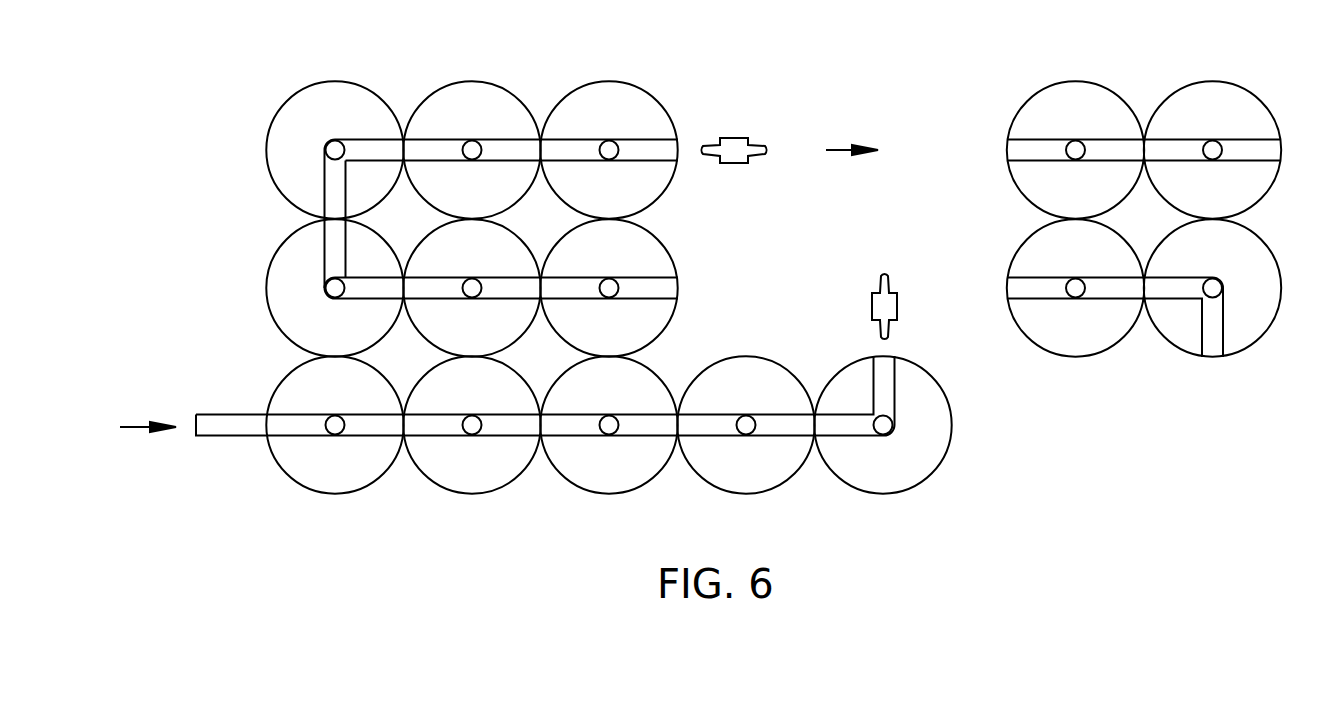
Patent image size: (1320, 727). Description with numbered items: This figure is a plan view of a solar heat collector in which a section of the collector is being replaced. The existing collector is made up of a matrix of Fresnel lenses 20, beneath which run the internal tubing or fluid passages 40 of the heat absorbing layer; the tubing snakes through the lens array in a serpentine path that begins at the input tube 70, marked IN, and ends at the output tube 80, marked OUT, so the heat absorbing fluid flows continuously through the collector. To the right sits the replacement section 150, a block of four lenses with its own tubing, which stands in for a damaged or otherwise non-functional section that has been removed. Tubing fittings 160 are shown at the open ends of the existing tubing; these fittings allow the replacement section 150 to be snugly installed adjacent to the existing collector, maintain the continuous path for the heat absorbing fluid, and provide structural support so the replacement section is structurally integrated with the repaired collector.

The Fresnel lenses 20 is at (300, 105).
The internal tubing or fluid passages 40 is at (323, 182).
The input tube 70 is at (133, 426).
The output tube 80 is at (838, 150).
The replacement section 150 is at (1160, 53).
The tubing fittings 160 is at (735, 138).